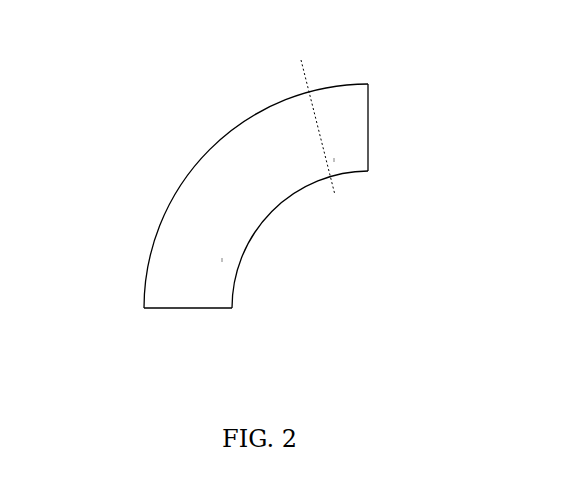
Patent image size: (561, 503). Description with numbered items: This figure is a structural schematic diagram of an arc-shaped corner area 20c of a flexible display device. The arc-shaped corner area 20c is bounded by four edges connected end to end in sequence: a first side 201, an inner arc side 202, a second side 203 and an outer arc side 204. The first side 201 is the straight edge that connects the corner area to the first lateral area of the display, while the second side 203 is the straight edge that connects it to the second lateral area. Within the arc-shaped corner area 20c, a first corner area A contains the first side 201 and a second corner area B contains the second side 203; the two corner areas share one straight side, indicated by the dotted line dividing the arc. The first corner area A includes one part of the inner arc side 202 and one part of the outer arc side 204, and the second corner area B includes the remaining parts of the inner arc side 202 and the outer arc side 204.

The arc-shaped corner area 20c is at (253, 199).
The first side 201 is at (188, 308).
The inner arc side 202 is at (289, 199).
The second side 203 is at (368, 131).
The outer arc side 204 is at (215, 133).
The first corner area A is at (222, 260).
The second corner area B is at (334, 160).